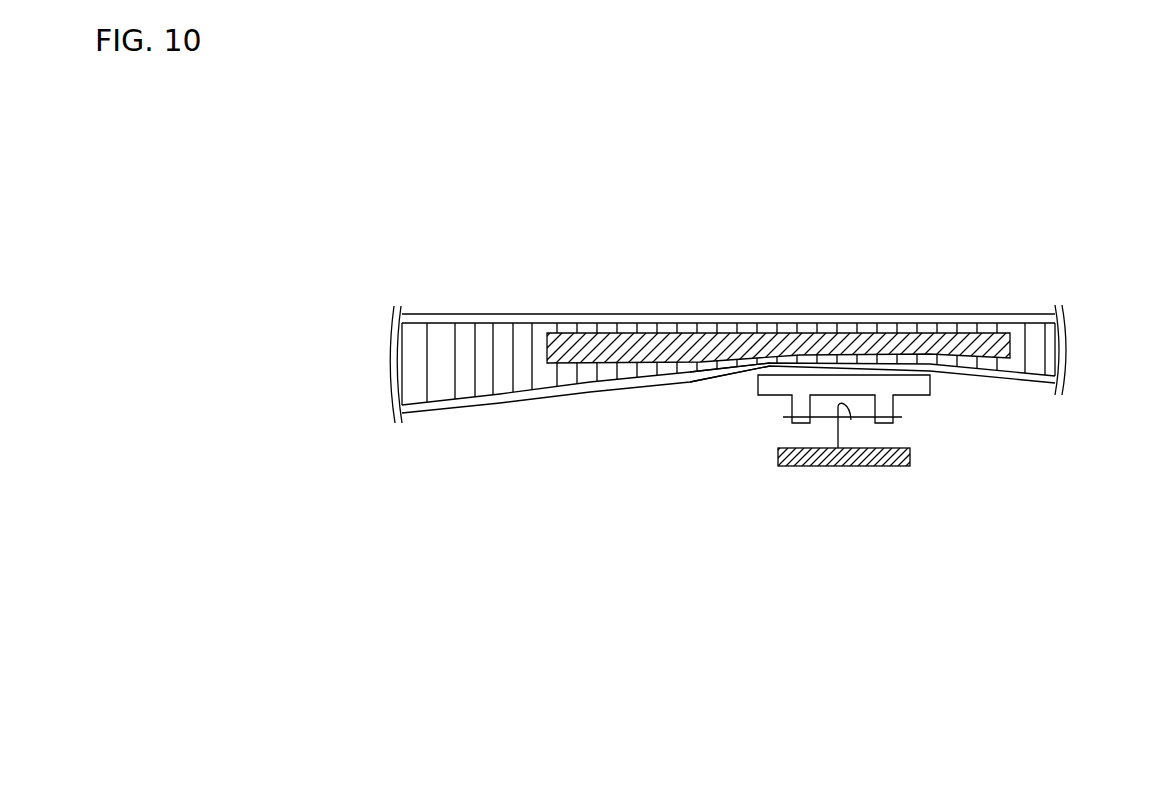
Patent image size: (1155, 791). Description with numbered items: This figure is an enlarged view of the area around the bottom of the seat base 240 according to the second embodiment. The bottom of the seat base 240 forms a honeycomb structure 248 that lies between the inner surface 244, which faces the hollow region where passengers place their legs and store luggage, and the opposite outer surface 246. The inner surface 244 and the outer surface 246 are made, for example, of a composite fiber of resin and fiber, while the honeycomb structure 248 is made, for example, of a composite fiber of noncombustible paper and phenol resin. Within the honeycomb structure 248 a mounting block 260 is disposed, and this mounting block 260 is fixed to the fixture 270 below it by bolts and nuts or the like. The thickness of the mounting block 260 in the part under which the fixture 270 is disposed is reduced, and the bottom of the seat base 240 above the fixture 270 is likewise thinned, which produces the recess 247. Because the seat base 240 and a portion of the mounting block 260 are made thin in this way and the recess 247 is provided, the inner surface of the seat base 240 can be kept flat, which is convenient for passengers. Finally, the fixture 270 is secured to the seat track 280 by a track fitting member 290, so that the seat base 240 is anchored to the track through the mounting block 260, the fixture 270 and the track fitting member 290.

The seat base 240 is at (988, 312).
The inner surface 244 is at (492, 318).
The outer surface 246 is at (427, 413).
The recess 247 is at (772, 363).
The honeycomb structure 248 is at (430, 372).
The mounting block 260 is at (623, 337).
The fixture 270 is at (932, 392).
The seat track 280 is at (840, 448).
The track fitting member 290 is at (837, 438).